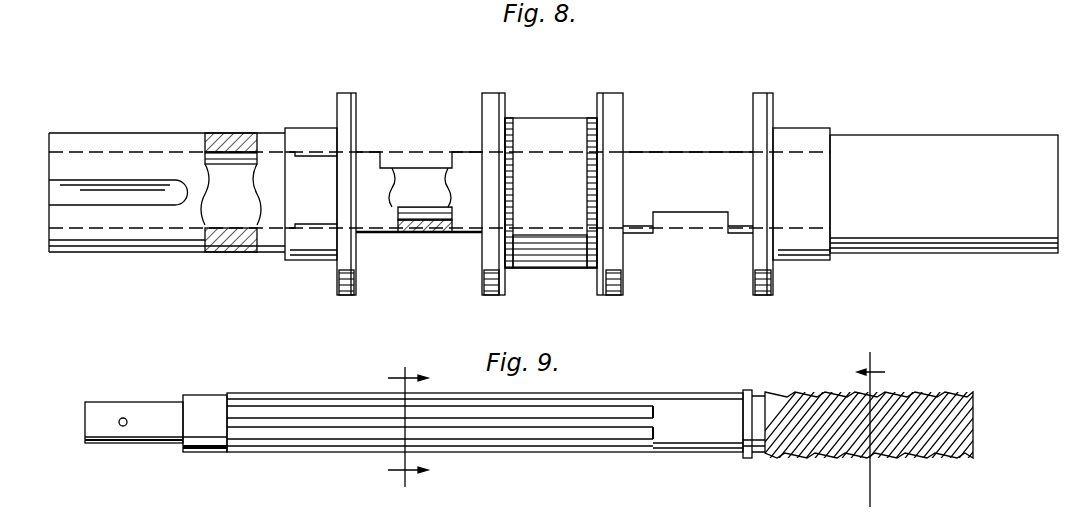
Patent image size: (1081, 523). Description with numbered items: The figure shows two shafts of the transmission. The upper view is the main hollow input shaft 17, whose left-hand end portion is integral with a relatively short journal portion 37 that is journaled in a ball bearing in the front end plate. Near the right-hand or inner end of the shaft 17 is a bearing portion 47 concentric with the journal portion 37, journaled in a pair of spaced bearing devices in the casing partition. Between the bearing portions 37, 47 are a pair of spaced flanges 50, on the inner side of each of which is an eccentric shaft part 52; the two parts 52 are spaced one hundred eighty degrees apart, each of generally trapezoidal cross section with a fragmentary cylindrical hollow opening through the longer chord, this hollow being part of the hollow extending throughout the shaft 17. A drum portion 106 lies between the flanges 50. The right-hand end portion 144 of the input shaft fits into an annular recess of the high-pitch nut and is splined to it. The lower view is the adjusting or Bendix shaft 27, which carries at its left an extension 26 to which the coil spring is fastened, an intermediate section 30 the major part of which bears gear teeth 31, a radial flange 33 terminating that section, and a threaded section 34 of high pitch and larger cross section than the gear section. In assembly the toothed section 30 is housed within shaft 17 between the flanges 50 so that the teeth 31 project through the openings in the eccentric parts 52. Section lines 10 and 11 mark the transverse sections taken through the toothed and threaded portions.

In FIG. 8, the main hollow input shaft 17 is at (272, 129).
In FIG. 8, the journal portion 37 is at (310, 128).
In FIG. 8, the spaced flanges 50 is at (347, 93).
In FIG. 8, the eccentric shaft part 52 is at (375, 151).
In FIG. 8, the drum 106 is at (558, 121).
In FIG. 8, the bearing portion 47 is at (801, 127).
In FIG. 8, the right-hand end portion 144 is at (938, 135).
In FIG. 9, the extension 26 is at (158, 444).
In FIG. 9, the adjusting or Bendix shaft 27 is at (232, 390).
In FIG. 9, the intermediate section 30 is at (212, 458).
In FIG. 9, the gear teeth 31 is at (358, 456).
In FIG. 9, the radial flange 33 is at (747, 458).
In FIG. 9, the threaded section 34 is at (935, 460).
In FIG. 9, the outwardly extending flange 10 is at (408, 429).
In FIG. 9, the section line 11- 11 is at (874, 426).